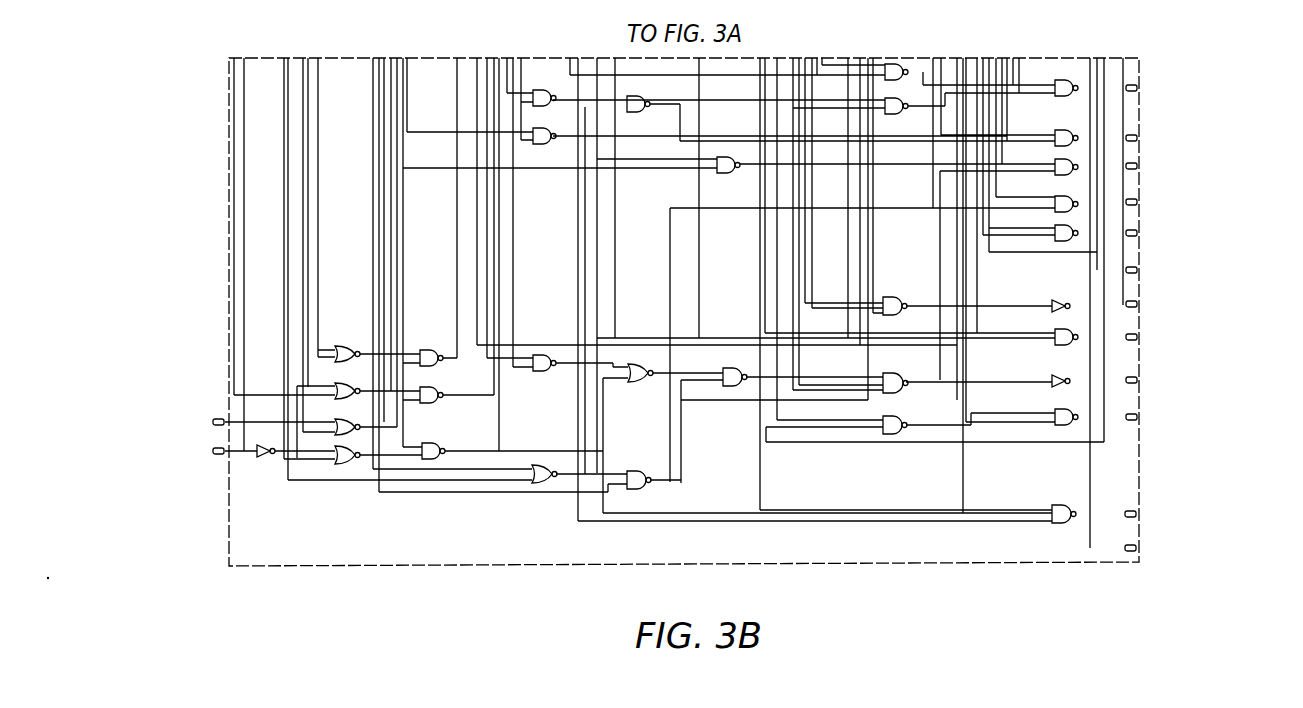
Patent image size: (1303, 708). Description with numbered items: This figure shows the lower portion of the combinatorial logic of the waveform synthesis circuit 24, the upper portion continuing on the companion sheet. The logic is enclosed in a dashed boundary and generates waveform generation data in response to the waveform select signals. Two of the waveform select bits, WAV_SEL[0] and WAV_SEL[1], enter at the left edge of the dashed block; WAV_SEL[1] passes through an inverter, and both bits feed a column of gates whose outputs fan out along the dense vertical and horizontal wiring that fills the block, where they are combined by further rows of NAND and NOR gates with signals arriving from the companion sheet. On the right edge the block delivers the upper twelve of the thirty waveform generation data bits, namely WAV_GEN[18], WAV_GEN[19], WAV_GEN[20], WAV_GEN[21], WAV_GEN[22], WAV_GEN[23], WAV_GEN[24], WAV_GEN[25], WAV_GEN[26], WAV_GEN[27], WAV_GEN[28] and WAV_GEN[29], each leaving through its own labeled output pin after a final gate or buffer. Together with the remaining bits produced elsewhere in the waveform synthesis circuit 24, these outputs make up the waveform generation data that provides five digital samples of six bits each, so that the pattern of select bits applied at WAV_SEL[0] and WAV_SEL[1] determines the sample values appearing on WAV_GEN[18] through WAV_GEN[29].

The WAV_GEN[18] waveform generation data bit 18 is at (1078, 88).
The WAV_GEN[19] waveform generation data bit 19 is at (1078, 138).
The WAV_GEN[20] waveform generation data bit 20 is at (1078, 167).
The WAV_GEN[21] waveform generation data bit 21 is at (1078, 203).
The WAV_GEN[22] waveform generation data bit 22 is at (1078, 233).
The WAV_GEN[23] waveform generation data bit 23 is at (1090, 270).
The waveform synthesis circuit 24 is at (1070, 305).
The WAV_GEN[25] waveform generation data bit 25 is at (1078, 337).
The WAV_GEN[26] waveform generation data bit 26 is at (1070, 381).
The WAV_GEN[27] waveform generation data bit 27 is at (1078, 417).
The WAV_GEN[28] waveform generation data bit 28 is at (1075, 514).
The WAV_GEN[29] waveform generation data bit 29 is at (1090, 548).
The WAV_SEL[0] waveform select bit 0 is at (207, 422).
The WAV_SEL[1] waveform select bit 1 is at (207, 451).